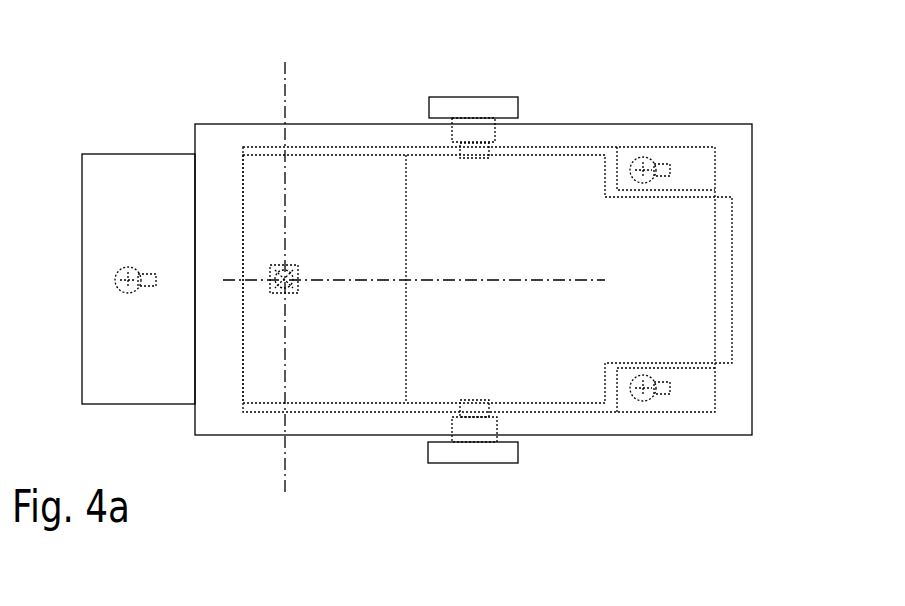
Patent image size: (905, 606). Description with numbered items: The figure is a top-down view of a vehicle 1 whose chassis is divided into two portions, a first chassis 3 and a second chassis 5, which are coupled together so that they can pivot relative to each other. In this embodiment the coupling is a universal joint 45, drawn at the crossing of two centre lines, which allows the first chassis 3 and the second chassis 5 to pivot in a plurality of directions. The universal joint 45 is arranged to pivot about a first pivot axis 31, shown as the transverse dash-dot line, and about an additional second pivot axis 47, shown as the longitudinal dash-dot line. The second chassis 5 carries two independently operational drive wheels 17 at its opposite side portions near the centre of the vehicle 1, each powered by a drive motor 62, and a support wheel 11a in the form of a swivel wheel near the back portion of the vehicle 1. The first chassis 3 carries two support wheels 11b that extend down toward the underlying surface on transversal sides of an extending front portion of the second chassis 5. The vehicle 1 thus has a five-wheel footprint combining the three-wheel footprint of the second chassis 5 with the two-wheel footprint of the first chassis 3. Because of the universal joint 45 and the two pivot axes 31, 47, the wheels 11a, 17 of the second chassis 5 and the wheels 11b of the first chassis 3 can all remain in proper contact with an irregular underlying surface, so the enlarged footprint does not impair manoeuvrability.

The vehicle 1 is at (237, 63).
The first chassis 3 is at (610, 420).
The second chassis 5 is at (97, 172).
The support wheel 11a is at (150, 285).
The support wheels 11b is at (663, 170).
The drive wheels 17 is at (486, 106).
The first pivot axis 31 is at (285, 88).
The universal joint 45 is at (288, 285).
The second pivot axis 47 is at (478, 280).
The drive motor 62 is at (490, 145).